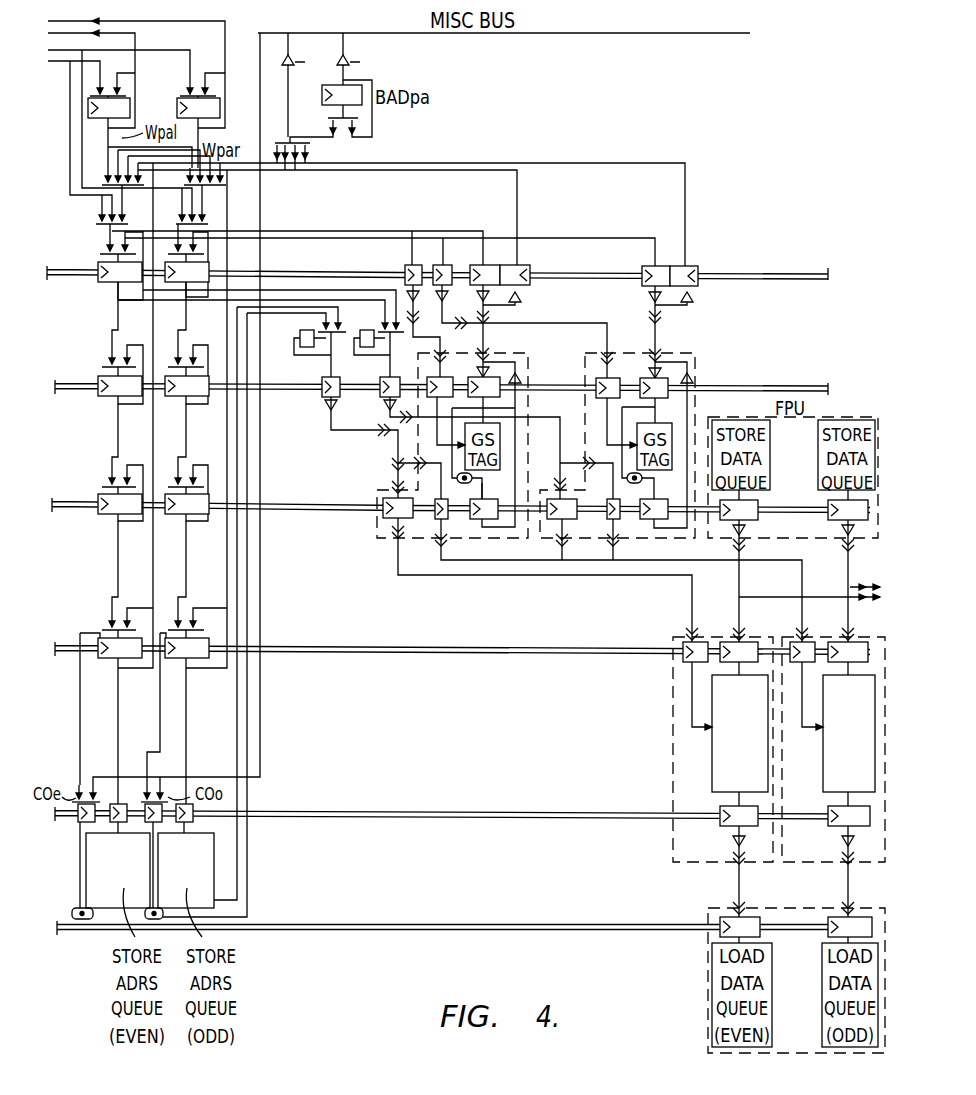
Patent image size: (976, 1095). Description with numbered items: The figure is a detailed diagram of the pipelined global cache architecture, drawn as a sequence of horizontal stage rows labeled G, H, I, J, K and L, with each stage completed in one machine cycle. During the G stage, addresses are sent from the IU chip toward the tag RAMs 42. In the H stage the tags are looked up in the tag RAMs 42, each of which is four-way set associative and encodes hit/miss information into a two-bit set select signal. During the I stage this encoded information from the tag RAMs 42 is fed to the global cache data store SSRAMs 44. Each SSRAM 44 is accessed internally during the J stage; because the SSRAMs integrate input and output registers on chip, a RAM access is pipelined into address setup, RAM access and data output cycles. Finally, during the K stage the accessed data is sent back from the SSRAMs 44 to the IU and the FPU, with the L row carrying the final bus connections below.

The tag RAM 42 is at (508, 353).
The global cache data store SSRAM 44 is at (670, 724).
The G stage G is at (437, 284).
The H stage H is at (441, 398).
The I stage I is at (461, 517).
The J stage J is at (462, 659).
The K stage K is at (462, 826).
The L bus L is at (464, 941).